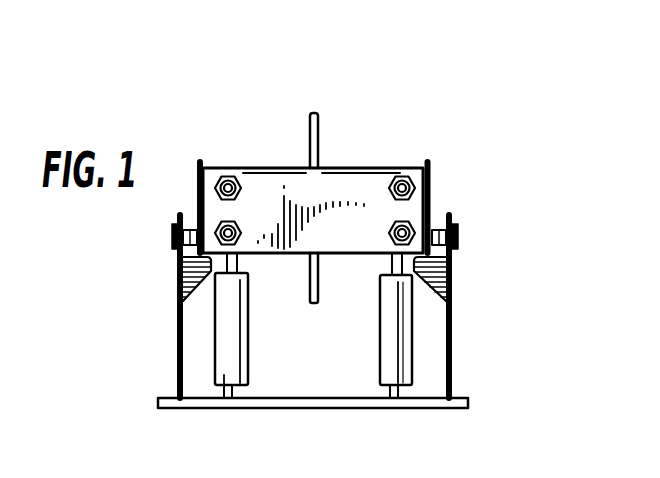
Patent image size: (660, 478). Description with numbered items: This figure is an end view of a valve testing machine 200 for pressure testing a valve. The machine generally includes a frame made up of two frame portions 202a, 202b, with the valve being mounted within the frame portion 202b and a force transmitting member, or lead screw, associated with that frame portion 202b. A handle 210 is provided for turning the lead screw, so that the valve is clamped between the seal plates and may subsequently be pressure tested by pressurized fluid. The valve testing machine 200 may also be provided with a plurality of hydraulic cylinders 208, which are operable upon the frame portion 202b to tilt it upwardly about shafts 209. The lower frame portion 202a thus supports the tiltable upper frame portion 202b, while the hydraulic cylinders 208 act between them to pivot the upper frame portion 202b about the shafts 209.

The valve testing machine 200 is at (355, 152).
The frame 202a is at (452, 372).
The frame 202b is at (433, 185).
The hydraulic cylinders 208 is at (220, 393).
The shafts 209 is at (170, 232).
The handle 210 is at (307, 133).